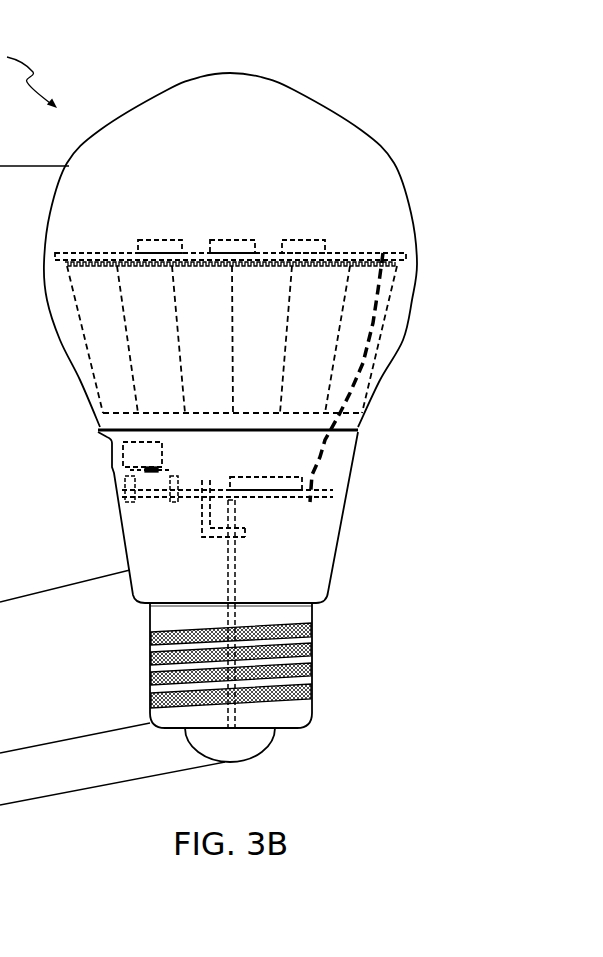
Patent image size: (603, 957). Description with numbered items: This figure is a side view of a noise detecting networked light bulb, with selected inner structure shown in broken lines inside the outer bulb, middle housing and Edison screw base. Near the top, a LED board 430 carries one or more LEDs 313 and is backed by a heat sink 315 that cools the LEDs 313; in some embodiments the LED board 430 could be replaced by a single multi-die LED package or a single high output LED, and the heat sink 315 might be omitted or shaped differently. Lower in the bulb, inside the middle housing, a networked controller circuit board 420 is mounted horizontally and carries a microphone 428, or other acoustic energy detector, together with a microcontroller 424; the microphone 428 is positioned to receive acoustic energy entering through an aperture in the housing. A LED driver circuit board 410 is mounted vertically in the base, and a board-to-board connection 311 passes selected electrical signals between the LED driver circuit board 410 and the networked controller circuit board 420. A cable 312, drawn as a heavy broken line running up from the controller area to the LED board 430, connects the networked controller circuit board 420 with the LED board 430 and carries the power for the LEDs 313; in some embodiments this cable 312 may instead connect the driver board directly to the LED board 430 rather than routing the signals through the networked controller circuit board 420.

The LEDs 313 is at (293, 240).
The LED board 430 is at (355, 253).
The heat sink 315 is at (80, 320).
The cable 312 is at (347, 407).
The microphone 428 is at (162, 454).
The microcontroller 424 is at (267, 477).
The networked controller circuit board 420 is at (333, 493).
The board-to-board connection 311 is at (243, 532).
The LED driver circuit board 410 is at (235, 572).